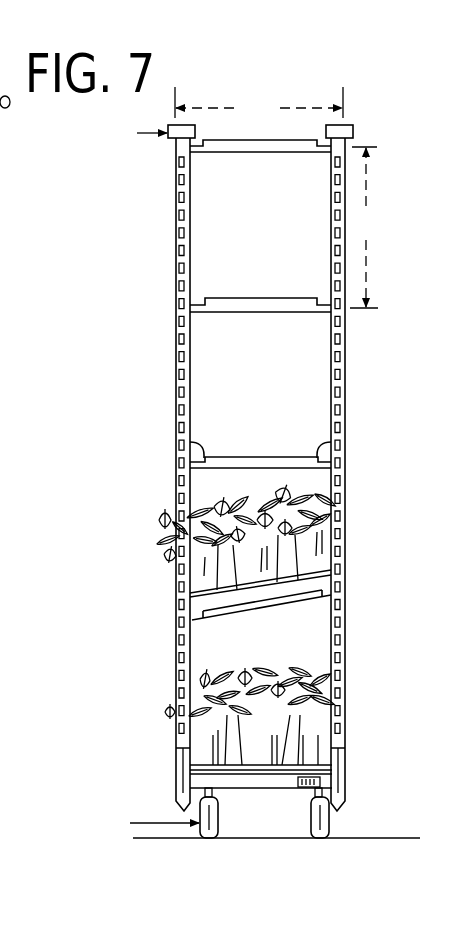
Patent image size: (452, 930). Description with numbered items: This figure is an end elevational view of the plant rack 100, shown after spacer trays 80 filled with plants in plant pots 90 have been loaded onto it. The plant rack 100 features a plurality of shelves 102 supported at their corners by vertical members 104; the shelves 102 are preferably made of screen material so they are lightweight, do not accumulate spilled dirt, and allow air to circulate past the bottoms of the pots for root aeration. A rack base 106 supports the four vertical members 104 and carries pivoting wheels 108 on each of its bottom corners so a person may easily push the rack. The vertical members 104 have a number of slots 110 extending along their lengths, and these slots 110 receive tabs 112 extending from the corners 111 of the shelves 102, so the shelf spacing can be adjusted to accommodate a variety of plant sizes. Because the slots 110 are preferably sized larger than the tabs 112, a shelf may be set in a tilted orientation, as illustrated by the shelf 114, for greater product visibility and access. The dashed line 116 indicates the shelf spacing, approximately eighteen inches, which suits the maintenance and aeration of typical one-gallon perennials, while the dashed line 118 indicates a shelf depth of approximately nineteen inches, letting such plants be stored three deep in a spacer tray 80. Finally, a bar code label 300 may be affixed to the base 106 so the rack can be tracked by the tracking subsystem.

The plant rack 100 is at (377, 132).
The shelves 102 is at (331, 437).
The vertical members 104 is at (345, 378).
The rack base 106 is at (345, 773).
The pivoting wheels 108 is at (328, 823).
The slots 110 is at (338, 343).
The corners 111 is at (190, 446).
The tabs 112 is at (337, 472).
The tilted shelf 114 is at (308, 602).
The shelf spacing 116 is at (376, 227).
The shelf depth 118 is at (259, 101).
The spacer tray 80 is at (330, 578).
The plant pot 90 is at (333, 532).
The bar code label 300 is at (321, 782).